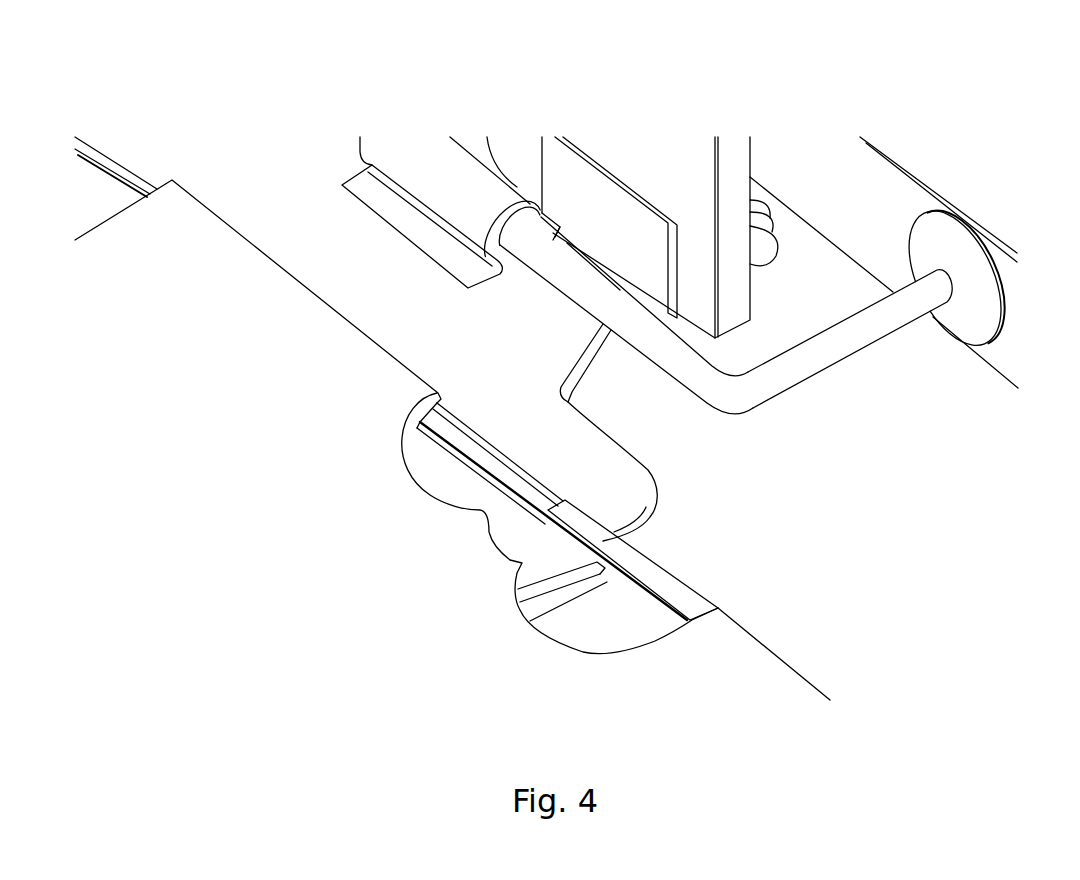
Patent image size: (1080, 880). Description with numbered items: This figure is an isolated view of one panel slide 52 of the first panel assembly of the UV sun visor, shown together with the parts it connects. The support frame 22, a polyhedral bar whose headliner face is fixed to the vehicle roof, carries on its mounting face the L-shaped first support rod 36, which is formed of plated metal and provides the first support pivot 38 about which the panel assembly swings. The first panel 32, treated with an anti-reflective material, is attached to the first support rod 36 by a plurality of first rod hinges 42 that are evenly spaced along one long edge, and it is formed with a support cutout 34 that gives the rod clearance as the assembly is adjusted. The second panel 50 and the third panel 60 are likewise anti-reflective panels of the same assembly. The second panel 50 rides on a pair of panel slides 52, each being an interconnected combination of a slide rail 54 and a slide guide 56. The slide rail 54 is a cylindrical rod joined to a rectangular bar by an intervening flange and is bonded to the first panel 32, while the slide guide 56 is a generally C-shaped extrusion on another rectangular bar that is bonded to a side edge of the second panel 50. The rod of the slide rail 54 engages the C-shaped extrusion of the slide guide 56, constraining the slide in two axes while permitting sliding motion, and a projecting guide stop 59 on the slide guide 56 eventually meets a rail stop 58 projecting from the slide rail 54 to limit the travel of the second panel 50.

The support frame 22 is at (922, 178).
The first panel 32 is at (631, 503).
The support cutout 34 is at (650, 432).
The first support rod 36 is at (897, 317).
The first support pivot 38 is at (993, 307).
The first rod hinges 42 is at (469, 174).
The second panel 50 is at (98, 257).
The panel slide 52 is at (753, 591).
The slide rail 54 is at (528, 478).
The slide guide 56 is at (665, 592).
The rail stop 58 is at (560, 525).
The guide stop 59 is at (562, 525).
The third panel 60 is at (741, 148).